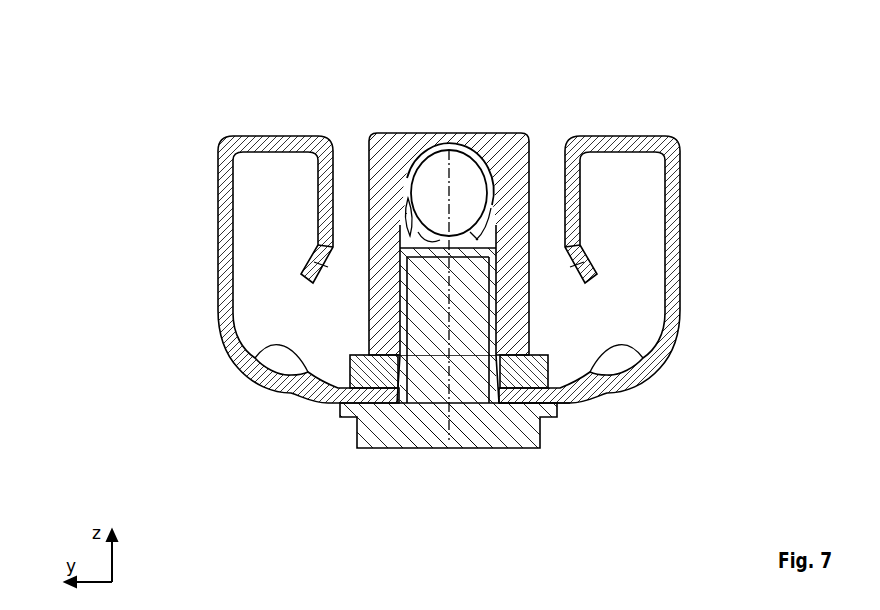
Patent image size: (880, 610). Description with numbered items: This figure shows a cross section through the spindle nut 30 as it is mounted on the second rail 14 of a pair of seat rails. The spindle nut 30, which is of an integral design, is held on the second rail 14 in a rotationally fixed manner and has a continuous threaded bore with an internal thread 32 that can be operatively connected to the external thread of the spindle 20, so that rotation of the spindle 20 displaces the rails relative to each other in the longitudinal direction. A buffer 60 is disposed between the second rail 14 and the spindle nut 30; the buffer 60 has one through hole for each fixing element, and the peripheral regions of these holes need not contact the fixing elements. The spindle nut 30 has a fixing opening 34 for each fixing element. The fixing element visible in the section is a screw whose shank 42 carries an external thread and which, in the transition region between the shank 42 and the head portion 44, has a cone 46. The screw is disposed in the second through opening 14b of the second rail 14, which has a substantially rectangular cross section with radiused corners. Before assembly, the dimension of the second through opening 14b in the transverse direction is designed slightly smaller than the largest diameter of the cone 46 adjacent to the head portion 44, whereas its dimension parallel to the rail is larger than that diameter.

The second rail 14 is at (680, 260).
The second through opening 14b is at (499, 400).
The spindle 20 is at (453, 172).
The spindle nut 30 is at (392, 147).
The internal thread 32 is at (478, 146).
The fixing opening 34 is at (500, 300).
The shank 42 is at (432, 306).
The head portion 44 is at (383, 433).
The cone 46 is at (495, 375).
The buffer 60 is at (324, 401).